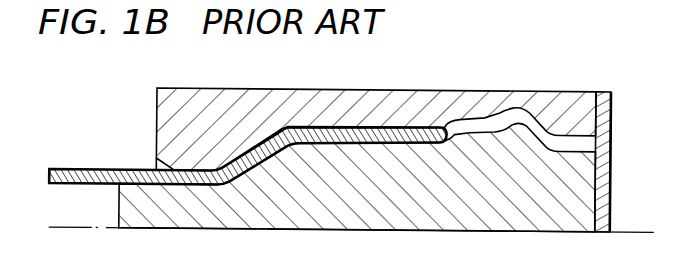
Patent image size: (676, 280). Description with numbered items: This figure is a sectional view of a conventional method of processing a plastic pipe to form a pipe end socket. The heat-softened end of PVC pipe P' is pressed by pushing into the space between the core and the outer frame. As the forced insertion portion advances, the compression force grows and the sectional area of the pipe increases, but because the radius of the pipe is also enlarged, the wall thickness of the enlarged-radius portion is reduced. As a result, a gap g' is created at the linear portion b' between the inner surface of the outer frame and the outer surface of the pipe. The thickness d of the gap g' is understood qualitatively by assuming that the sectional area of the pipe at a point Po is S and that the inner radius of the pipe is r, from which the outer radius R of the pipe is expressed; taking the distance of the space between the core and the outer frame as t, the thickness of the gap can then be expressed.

The heat-softened end of PVC pipe P' is at (248, 149).
The gap g' is at (375, 90).
The distance of space between the core and the outer frame t is at (333, 160).
The thickness of the gap d is at (393, 163).
The linear portion b' is at (329, 170).
The point Po is at (368, 147).
The outer radius of pipe R is at (360, 142).
The inner radius of the pipe r is at (377, 144).